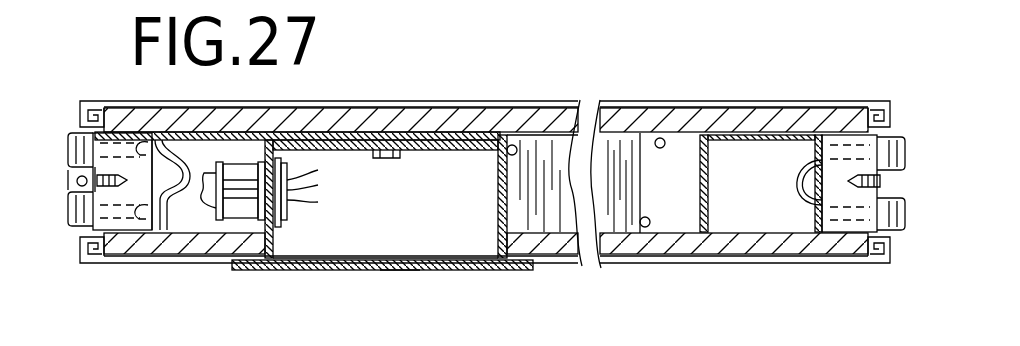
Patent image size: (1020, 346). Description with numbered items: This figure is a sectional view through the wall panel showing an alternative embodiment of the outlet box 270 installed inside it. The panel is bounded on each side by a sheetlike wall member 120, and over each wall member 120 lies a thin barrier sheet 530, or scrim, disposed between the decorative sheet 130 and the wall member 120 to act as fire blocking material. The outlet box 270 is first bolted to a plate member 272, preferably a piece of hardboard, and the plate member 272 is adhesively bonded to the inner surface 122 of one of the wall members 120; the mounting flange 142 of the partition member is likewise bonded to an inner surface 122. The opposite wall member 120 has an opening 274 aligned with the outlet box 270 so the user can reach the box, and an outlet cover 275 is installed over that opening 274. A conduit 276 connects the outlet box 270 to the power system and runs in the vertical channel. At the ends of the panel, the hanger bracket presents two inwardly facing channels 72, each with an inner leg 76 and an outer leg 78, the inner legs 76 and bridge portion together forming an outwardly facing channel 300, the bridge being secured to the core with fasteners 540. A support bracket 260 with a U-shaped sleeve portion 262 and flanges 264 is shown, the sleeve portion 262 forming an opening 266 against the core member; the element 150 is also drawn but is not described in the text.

The inwardly facing channel 72 is at (900, 140).
The inner leg 76 is at (90, 172).
The outer leg 78 is at (80, 177).
The wall member 120 is at (617, 125).
The inner surface 122 is at (662, 140).
The decorative sheet 130 is at (497, 101).
The mounting flange 142 is at (745, 140).
The panel 150 is at (602, 215).
The support bracket 260 is at (805, 190).
The U-shaped sleeve portion 262 is at (148, 215).
The flange 264 is at (162, 225).
The opening 266 is at (168, 160).
The outlet box 270 is at (283, 248).
The plate member 272 is at (353, 135).
The opening 274 is at (430, 265).
The outlet cover 275 is at (398, 270).
The conduit 276 is at (225, 222).
The outwardly facing channel 300 is at (78, 187).
The barrier sheet 530 is at (447, 107).
The fastener 540 is at (862, 188).